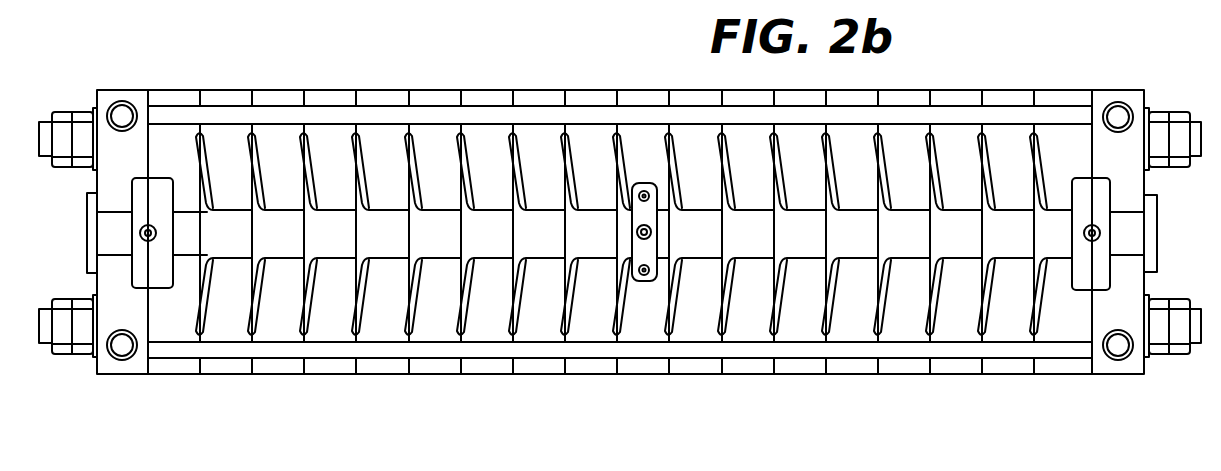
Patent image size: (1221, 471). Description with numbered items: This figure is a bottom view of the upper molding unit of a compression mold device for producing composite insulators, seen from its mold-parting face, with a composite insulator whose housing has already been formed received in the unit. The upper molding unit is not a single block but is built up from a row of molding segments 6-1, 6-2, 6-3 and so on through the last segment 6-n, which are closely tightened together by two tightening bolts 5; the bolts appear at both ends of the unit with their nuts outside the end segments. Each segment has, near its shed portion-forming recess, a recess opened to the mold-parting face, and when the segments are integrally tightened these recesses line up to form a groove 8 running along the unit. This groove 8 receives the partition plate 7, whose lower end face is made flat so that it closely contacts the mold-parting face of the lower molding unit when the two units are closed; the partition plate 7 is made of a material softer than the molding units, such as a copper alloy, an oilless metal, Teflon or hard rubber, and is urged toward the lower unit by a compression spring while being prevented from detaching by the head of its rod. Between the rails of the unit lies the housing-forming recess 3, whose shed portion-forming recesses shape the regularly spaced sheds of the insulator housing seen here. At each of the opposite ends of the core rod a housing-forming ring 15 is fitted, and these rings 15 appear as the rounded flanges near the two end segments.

The housing-forming recess 3 is at (1050, 162).
The tightening bolt 5 is at (1177, 98).
The molding segment 6-1 is at (112, 370).
The molding segment 6-2 is at (175, 367).
The molding segment 6-3 is at (232, 366).
The molding segment 6-n is at (1118, 372).
The partition plate 7 is at (537, 103).
The groove 8 is at (321, 110).
The housing-forming ring 15 is at (155, 212).